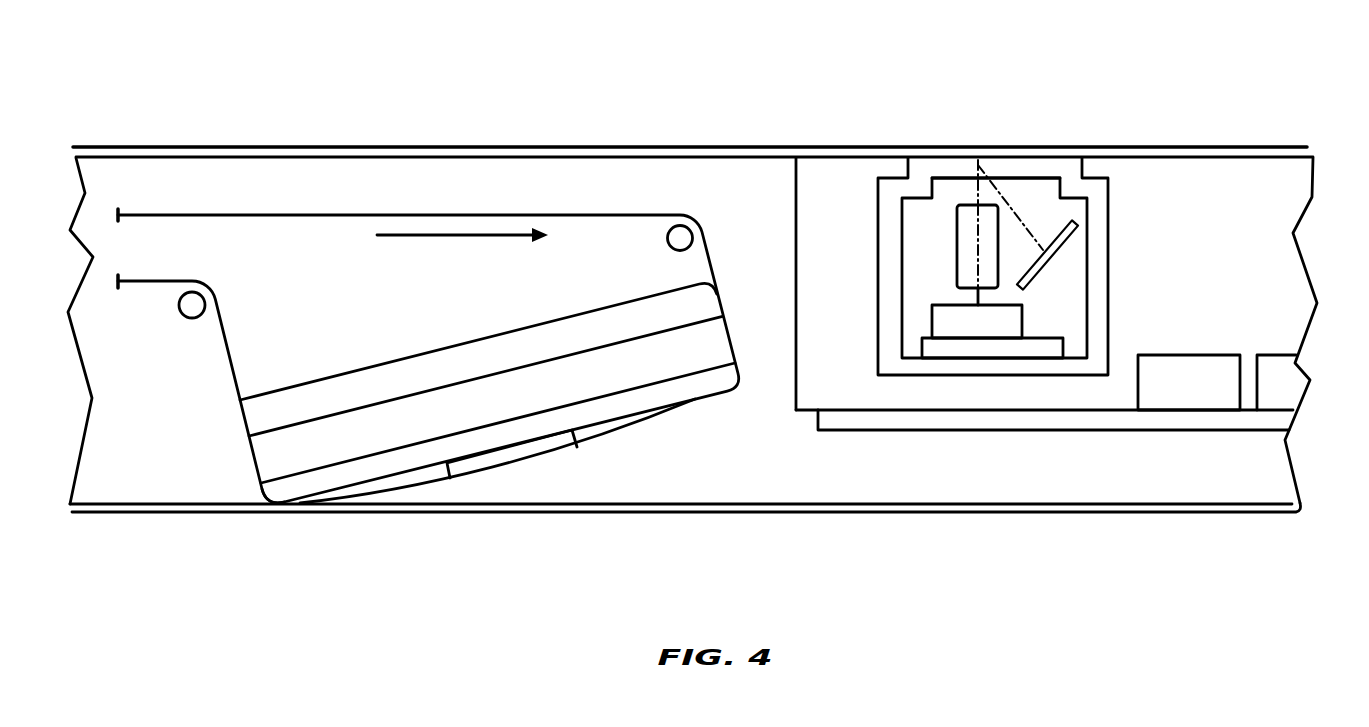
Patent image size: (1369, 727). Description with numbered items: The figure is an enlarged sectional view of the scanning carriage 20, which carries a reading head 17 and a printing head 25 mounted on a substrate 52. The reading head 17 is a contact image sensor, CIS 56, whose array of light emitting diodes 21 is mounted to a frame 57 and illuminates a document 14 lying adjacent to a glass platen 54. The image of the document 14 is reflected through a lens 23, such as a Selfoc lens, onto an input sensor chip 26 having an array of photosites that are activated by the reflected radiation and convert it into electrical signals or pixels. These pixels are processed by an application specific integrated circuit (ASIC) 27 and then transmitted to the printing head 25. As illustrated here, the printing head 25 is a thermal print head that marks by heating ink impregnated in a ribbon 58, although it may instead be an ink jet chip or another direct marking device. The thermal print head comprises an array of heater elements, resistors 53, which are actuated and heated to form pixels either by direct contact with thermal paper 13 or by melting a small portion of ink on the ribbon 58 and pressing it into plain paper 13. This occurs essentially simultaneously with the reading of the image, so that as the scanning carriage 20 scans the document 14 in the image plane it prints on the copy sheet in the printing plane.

The scanning carriage 20 is at (583, 132).
The document 14 is at (1268, 146).
The paper 13 is at (1062, 512).
The substrate 52 is at (1243, 473).
The contact image sensor 56 is at (872, 303).
The frame 57 is at (1108, 290).
The glass platen 54 is at (1012, 170).
The reading head 17 is at (958, 157).
The lens 23 is at (958, 258).
The light emitting diodes 21 is at (1107, 245).
The input sensor chip 26 is at (977, 323).
The application specific integrated circuit 27 is at (1188, 355).
The ribbon 58 is at (229, 357).
The printing head 25 is at (645, 397).
The resistors 53 is at (281, 508).